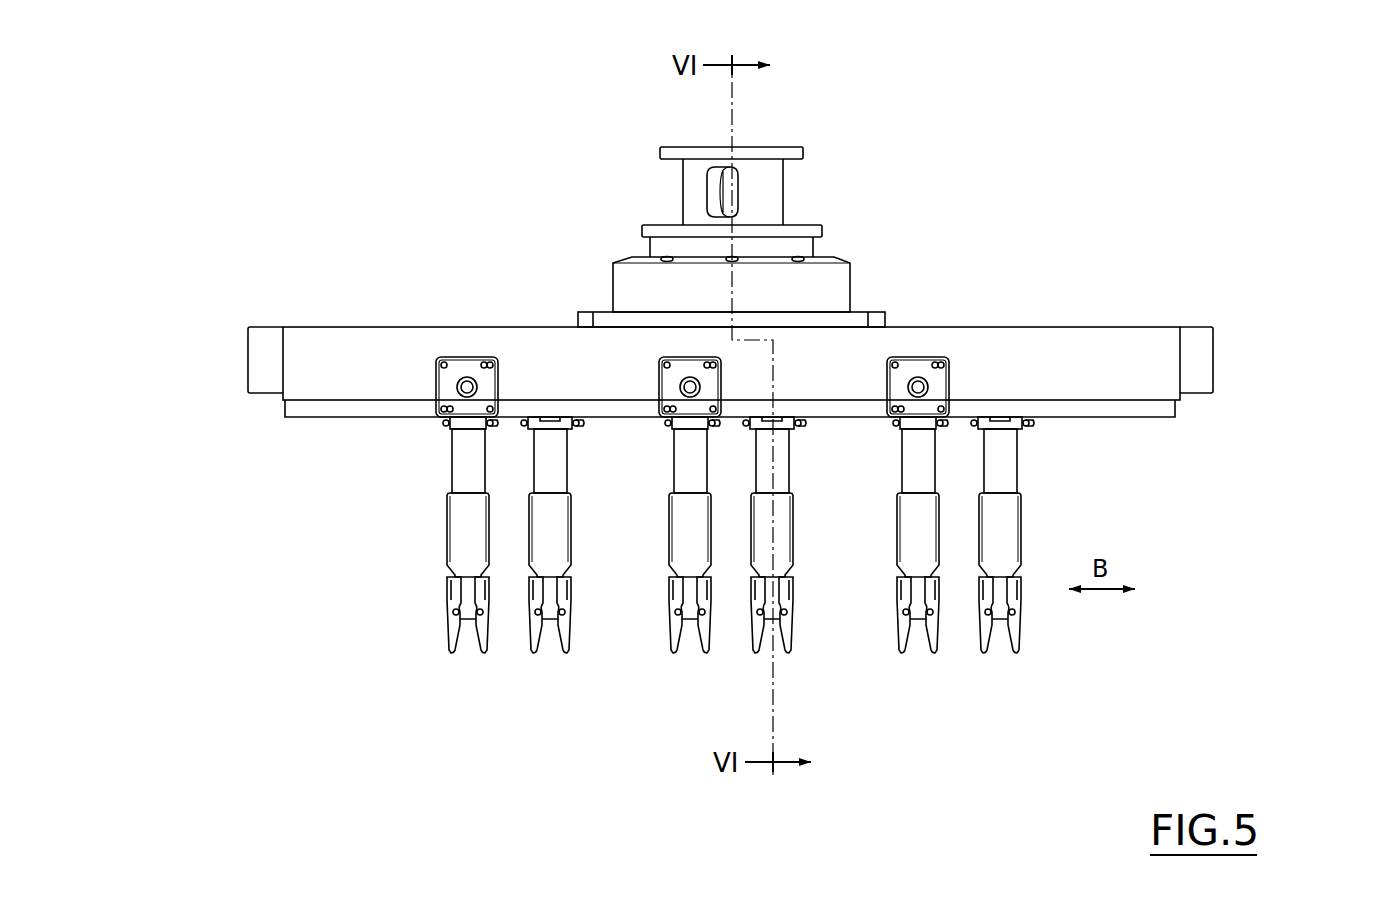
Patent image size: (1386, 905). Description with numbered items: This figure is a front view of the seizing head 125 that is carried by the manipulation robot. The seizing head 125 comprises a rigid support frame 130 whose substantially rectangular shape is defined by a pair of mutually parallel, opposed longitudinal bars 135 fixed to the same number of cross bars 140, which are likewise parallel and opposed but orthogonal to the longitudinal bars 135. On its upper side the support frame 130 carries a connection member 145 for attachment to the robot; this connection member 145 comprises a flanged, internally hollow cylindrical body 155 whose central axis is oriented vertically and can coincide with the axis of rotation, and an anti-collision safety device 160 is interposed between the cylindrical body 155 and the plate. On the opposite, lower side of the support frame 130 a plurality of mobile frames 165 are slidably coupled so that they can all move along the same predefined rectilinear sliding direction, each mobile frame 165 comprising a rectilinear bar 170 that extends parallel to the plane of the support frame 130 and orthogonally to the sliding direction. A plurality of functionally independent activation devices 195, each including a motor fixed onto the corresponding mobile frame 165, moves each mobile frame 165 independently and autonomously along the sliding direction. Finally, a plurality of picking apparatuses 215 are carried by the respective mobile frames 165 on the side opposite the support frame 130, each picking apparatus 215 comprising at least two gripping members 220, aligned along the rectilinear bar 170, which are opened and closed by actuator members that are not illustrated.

The seizing head 125 is at (216, 243).
The support frame 130 is at (256, 421).
The longitudinal bars 135 is at (267, 363).
The cross bars 140 is at (1085, 347).
The connection member 145 is at (653, 135).
The cylindrical body 155 is at (763, 195).
The anti-collision safety device 160 is at (638, 290).
The mobile frames 165 is at (423, 429).
The rectilinear bar 170 is at (448, 425).
The activation devices 195 is at (431, 345).
The picking apparatuses 215 is at (778, 648).
The gripping members 220 is at (452, 602).